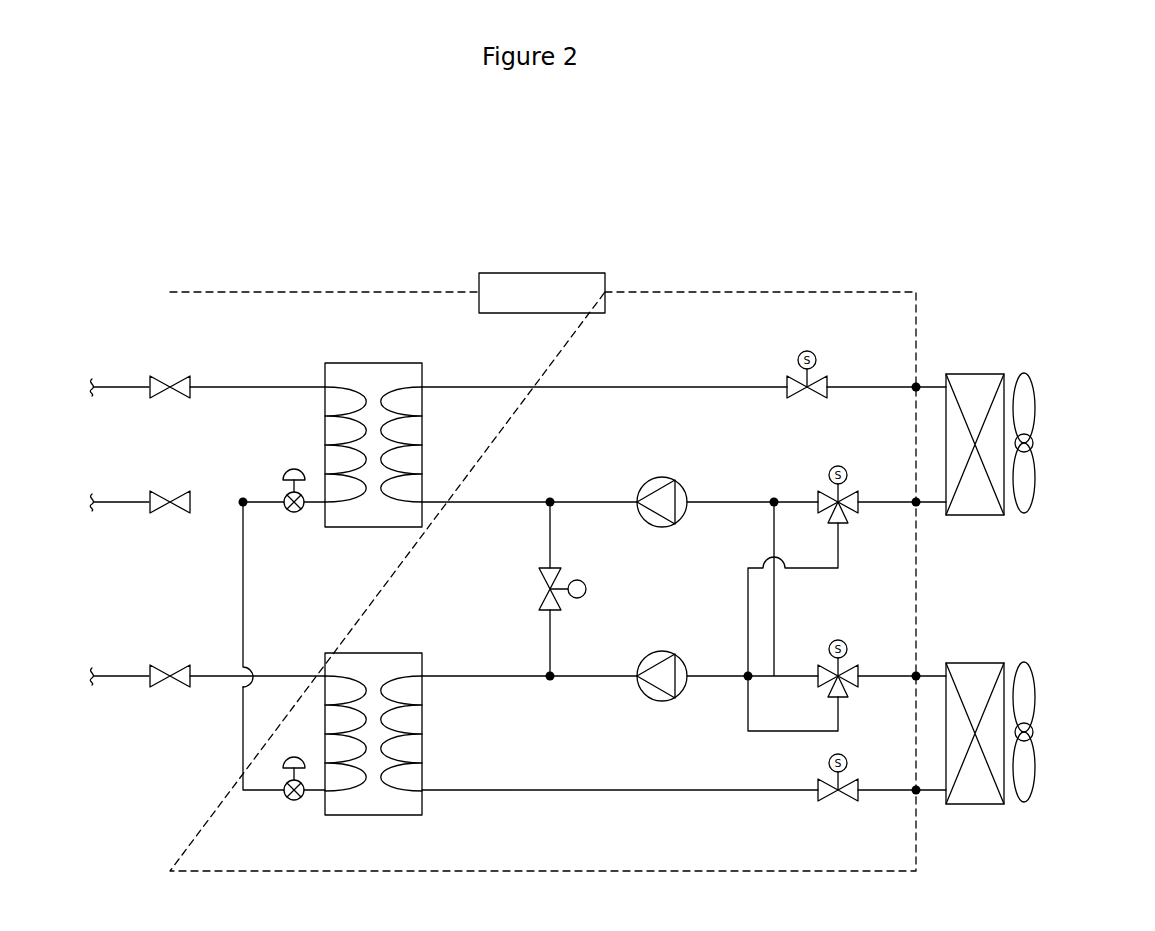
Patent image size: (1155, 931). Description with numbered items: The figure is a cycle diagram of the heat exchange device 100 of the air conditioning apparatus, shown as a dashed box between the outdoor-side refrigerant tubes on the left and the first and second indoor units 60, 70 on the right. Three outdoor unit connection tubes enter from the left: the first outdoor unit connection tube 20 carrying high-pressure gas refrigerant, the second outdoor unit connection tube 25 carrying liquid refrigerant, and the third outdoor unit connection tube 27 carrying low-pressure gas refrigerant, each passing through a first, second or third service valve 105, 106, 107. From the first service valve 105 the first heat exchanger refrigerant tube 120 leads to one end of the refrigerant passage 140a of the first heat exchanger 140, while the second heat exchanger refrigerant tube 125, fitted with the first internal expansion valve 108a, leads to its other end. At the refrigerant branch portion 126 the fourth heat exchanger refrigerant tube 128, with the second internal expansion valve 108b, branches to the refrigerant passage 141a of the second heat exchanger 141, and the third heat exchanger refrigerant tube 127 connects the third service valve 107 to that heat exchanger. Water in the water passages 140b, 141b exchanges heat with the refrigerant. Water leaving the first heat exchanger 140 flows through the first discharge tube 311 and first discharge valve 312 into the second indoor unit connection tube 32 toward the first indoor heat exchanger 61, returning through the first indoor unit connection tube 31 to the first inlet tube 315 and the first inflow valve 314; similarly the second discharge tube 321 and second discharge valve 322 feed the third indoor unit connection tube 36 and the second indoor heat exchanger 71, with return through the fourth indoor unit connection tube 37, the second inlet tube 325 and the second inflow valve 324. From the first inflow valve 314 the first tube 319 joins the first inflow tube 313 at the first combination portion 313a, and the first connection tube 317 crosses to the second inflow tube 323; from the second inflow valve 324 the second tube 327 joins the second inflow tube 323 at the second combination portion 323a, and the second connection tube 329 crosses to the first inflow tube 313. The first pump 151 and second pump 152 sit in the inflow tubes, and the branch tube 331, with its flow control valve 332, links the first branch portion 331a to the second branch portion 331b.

The heat exchange device 100 is at (668, 268).
The first outdoor unit connection tube 20 is at (129, 386).
The second outdoor unit connection tube 25 is at (129, 501).
The third outdoor unit connection tube 27 is at (129, 675).
The first service valve 105 is at (181, 376).
The second service valve 106 is at (181, 491).
The third service valve 107 is at (181, 667).
The first heat exchanger refrigerant tube 120 is at (262, 386).
The second heat exchanger refrigerant tube 125 is at (262, 501).
The refrigerant branch portion 126 is at (242, 497).
The third heat exchanger refrigerant tube 127 is at (284, 675).
The fourth heat exchanger refrigerant tube 128 is at (242, 733).
The first internal expansion valve 108a is at (294, 513).
The second internal expansion valve 108b is at (294, 801).
The first heat exchanger 140 is at (373, 362).
The refrigerant passage 140a is at (348, 385).
The water passage 140b is at (398, 385).
The second heat exchanger 141 is at (373, 652).
The refrigerant passage 141a is at (348, 674).
The water passage 141b is at (398, 674).
The first discharge tube 311 is at (641, 386).
The first discharge valve 312 is at (812, 353).
The first inflow tube 313 is at (483, 500).
The first combination portion 313a is at (773, 497).
The first inflow valve 314 is at (838, 465).
The first inlet tube 315 is at (887, 500).
The first connection tube 317 is at (815, 570).
The first tube 319 is at (797, 500).
The first pump 151 is at (648, 477).
The second pump 152 is at (648, 651).
The branch tube 331 is at (552, 638).
The first branch portion 331a is at (550, 497).
The second branch portion 331b is at (550, 682).
The flow control valve 332 is at (586, 583).
The second discharge tube 321 is at (668, 797).
The second discharge valve 322 is at (838, 801).
The second inflow tube 323 is at (483, 675).
The second combination portion 323a is at (745, 672).
The second inflow valve 324 is at (838, 640).
The second inlet tube 325 is at (887, 674).
The second tube 327 is at (840, 713).
The second connection tube 329 is at (797, 674).
The second indoor unit connection tube 32 is at (930, 385).
The first indoor unit connection tube 31 is at (930, 507).
The fourth indoor unit connection tube 37 is at (932, 674).
The third indoor unit connection tube 36 is at (932, 797).
The first indoor unit 60 is at (1047, 480).
The first indoor heat exchanger 61 is at (973, 373).
The second indoor unit 70 is at (1047, 768).
The second indoor heat exchanger 71 is at (973, 662).